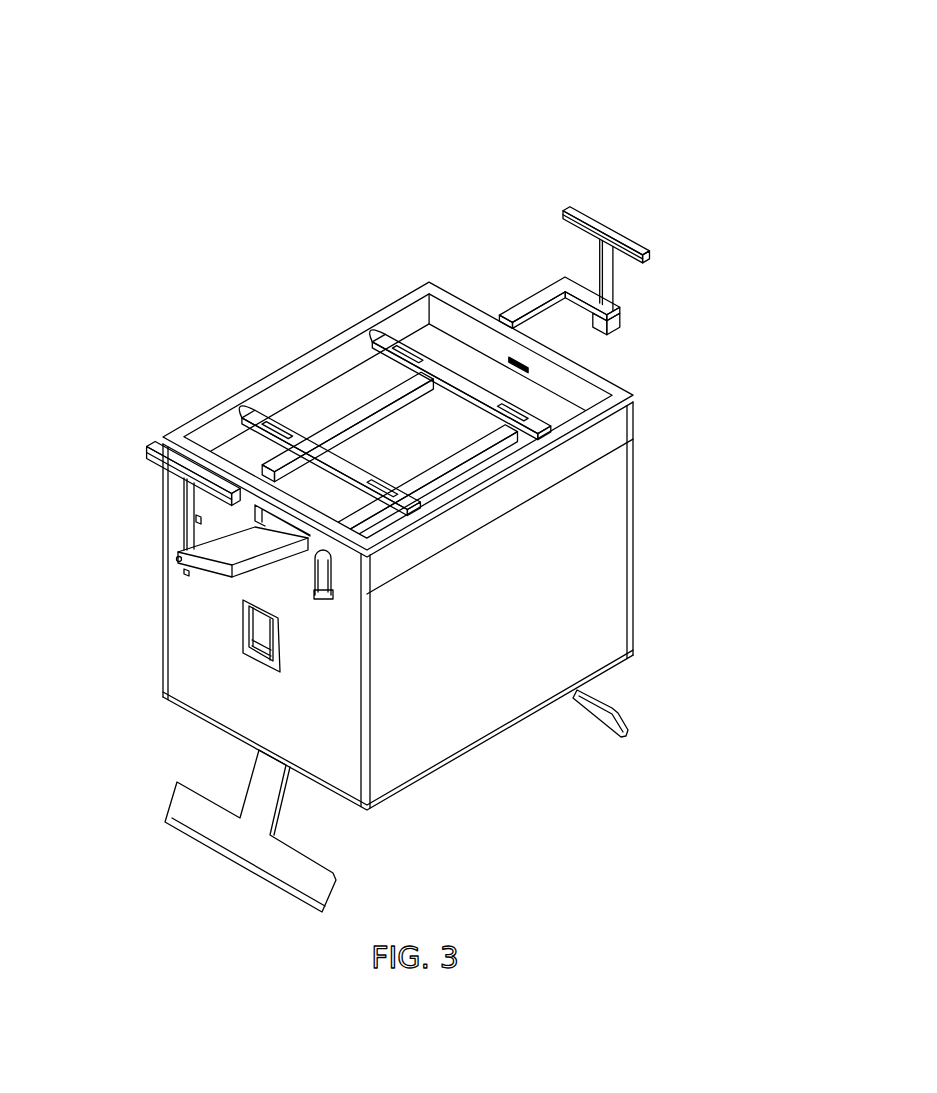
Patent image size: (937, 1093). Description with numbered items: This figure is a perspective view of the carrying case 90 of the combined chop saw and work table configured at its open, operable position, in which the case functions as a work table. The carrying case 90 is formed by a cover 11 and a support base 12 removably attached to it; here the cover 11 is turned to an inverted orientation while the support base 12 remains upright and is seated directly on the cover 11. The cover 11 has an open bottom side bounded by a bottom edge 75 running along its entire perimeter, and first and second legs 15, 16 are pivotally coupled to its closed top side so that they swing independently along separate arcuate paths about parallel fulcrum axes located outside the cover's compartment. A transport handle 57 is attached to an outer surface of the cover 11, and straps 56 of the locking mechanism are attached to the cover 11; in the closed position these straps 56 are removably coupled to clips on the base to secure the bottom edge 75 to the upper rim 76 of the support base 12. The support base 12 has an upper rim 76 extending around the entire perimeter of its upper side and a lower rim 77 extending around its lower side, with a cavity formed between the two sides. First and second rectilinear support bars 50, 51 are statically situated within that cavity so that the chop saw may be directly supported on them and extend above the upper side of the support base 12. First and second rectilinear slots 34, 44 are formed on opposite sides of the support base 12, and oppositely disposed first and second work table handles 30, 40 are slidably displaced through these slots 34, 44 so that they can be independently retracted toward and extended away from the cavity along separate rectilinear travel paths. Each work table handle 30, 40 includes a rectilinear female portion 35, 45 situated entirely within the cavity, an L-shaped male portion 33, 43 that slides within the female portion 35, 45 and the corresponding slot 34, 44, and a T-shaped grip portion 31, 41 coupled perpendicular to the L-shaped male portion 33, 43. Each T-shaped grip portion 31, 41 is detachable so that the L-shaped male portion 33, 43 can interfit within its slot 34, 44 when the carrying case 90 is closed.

The carrying case 90 is at (413, 465).
The cover 11 is at (488, 606).
The support base 12 is at (447, 369).
The upper rim 76 is at (398, 365).
The lower rim 77 is at (467, 479).
The bottom edge 75 is at (590, 516).
The rectilinear female portion 35 is at (398, 405).
The rectilinear female portion 45 is at (487, 438).
The first rectilinear slot 34 is at (650, 390).
The first rectilinear support bar 50 is at (261, 386).
The second rectilinear support bar 51 is at (460, 314).
The first work table handle 30 is at (606, 267).
The T-shaped grip portion 31 is at (650, 217).
The L-shaped male portion 33 is at (597, 330).
The second work table handle 40 is at (161, 508).
The T-shaped grip portion 41 is at (155, 438).
The L-shaped male portion 43 is at (181, 586).
The second rectilinear slot 44 is at (161, 545).
The strap 56 is at (402, 708).
The transport handle 57 is at (160, 655).
The first leg 15 is at (179, 831).
The second leg 16 is at (671, 707).